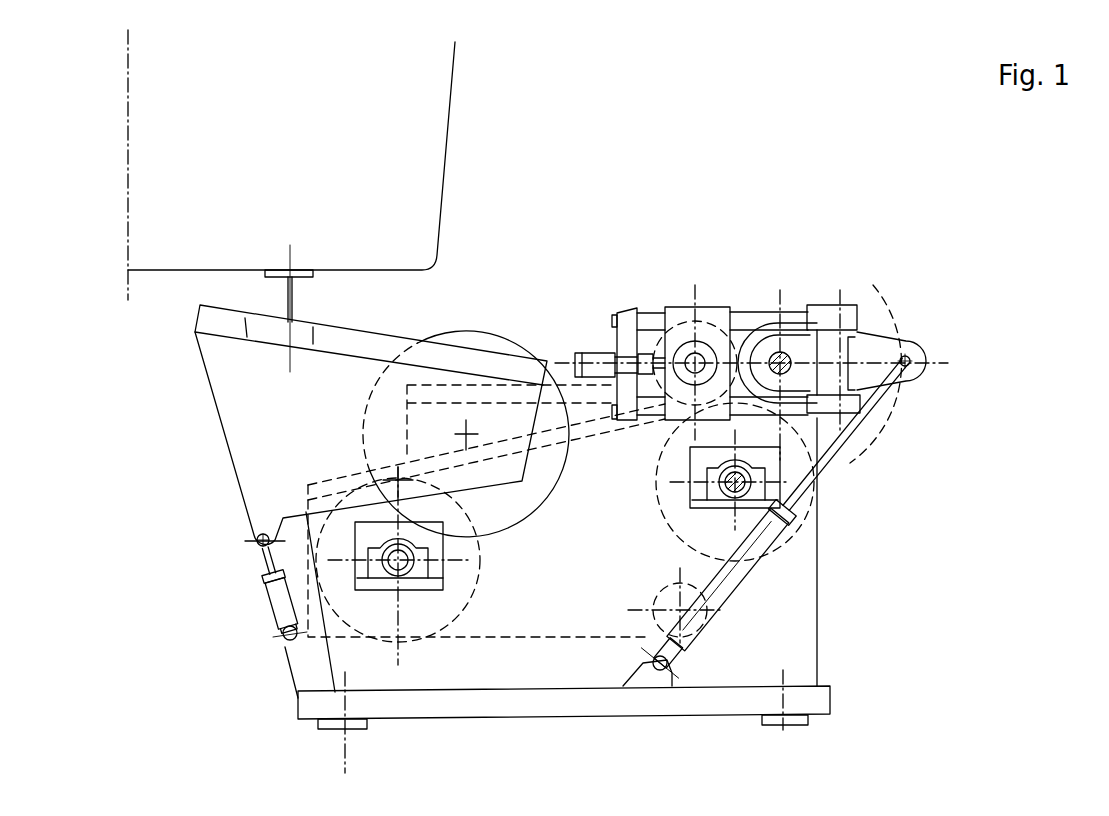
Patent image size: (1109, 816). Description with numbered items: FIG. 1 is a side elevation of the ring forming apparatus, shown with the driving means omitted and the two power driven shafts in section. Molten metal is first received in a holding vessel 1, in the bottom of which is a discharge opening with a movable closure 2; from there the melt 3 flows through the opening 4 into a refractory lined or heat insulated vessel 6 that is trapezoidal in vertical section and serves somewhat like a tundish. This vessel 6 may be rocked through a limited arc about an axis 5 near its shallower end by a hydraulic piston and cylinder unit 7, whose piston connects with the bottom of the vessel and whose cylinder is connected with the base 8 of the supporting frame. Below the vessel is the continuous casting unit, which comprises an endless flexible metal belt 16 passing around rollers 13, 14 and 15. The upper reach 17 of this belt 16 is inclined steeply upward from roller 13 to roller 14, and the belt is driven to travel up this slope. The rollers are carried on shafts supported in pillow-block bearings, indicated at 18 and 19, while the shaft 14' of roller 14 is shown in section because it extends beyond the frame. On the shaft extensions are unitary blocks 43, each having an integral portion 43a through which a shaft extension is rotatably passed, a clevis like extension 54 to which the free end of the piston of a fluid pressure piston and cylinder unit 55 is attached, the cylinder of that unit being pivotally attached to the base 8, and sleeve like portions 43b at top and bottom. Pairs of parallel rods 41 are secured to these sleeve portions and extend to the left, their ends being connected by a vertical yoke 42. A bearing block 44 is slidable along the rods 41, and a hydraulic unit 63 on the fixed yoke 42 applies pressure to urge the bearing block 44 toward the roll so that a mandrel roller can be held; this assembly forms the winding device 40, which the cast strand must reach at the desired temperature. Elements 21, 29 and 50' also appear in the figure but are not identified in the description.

The holding vessel 1 is at (433, 136).
The movable closure 2 is at (313, 275).
The melt 3 is at (288, 297).
The opening 4 is at (302, 330).
The axis 5 is at (462, 433).
The refractory lined vessel 6 is at (537, 418).
The hydraulic piston and cylinder unit 7 is at (243, 607).
The base 8 is at (313, 708).
The roller 13 is at (398, 640).
The roller 14 is at (803, 480).
The shaft 14' is at (722, 489).
The roller 15 is at (735, 603).
The endless flexible metal belt 16 is at (527, 640).
The upper reach of belt 17 is at (585, 435).
The bearing 18 is at (445, 577).
The bearing 19 is at (683, 497).
The swivel arm 21 is at (528, 345).
The carrier plate 29 is at (647, 423).
The winding device 40 is at (722, 298).
The parallel rods 41 is at (647, 320).
The vertical yoke 42 is at (627, 310).
The unitary block 43 is at (817, 322).
The integral portion 43a is at (773, 318).
The sleeve like portion 43b is at (755, 322).
The bearing block 44 is at (678, 318).
The swing arc 50' is at (876, 378).
The clevis like extension 54 is at (878, 350).
The fluid pressure piston and cylinder unit 55 is at (795, 552).
The hydraulic unit 63 is at (592, 352).